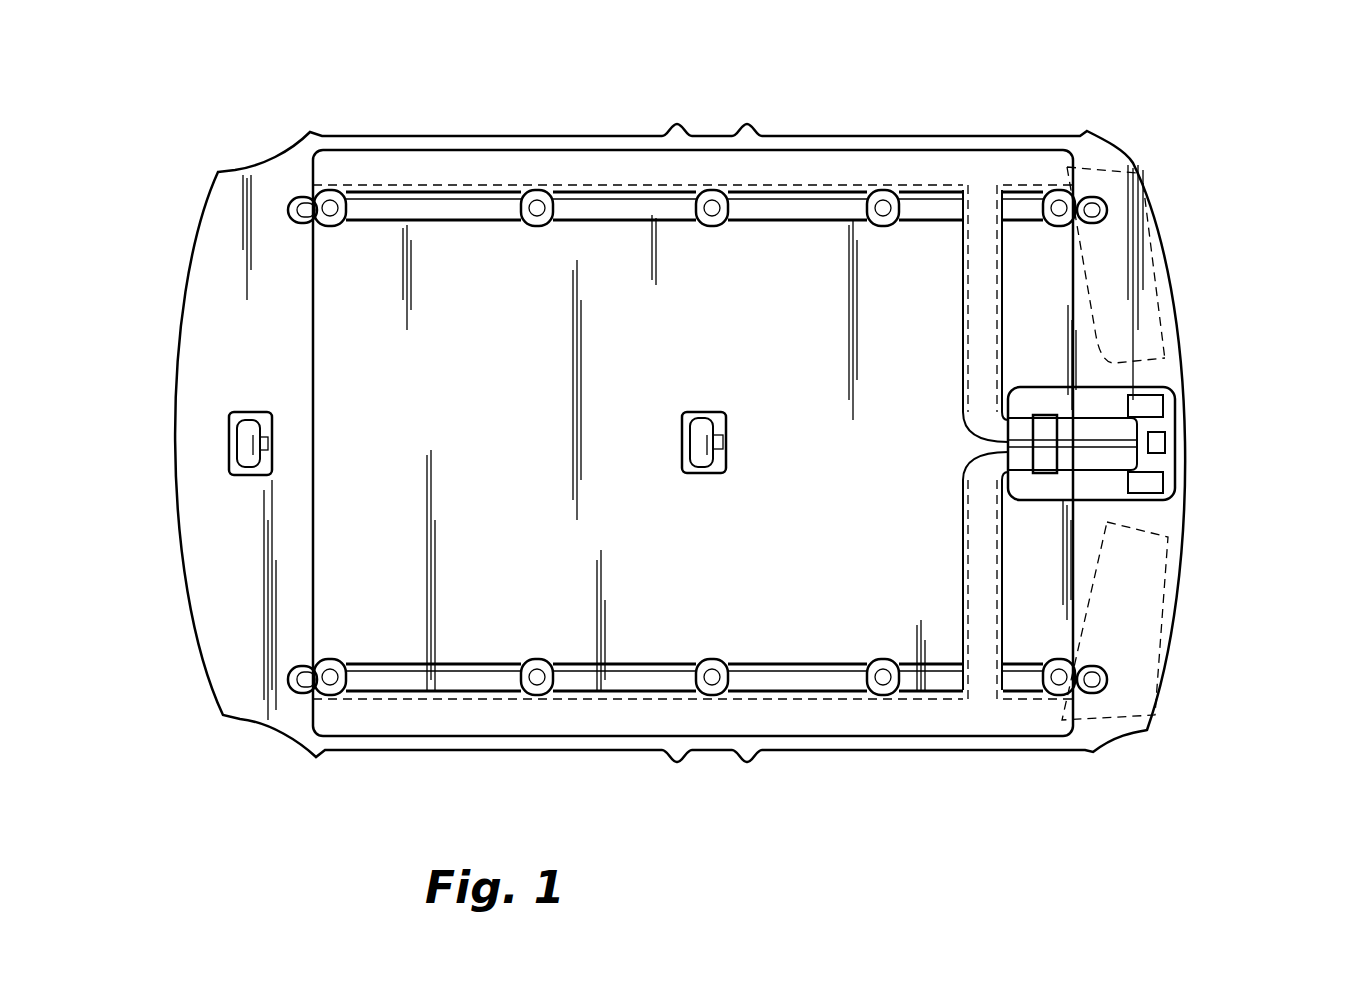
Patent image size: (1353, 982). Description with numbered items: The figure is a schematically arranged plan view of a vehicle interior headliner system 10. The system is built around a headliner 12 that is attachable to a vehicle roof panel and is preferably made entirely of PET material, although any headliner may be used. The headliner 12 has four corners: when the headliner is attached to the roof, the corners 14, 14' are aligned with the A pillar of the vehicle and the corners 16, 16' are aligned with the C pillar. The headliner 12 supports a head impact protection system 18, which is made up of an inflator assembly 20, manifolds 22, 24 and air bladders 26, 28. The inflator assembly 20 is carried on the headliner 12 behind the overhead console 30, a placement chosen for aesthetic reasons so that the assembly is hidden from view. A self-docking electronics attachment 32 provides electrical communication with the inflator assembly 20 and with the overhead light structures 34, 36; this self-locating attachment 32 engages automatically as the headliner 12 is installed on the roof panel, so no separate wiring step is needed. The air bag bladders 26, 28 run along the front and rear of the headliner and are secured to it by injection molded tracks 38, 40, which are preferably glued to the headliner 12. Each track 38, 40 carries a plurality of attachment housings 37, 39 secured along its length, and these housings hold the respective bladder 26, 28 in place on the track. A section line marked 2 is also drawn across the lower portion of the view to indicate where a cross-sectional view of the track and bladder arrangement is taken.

The vehicle interior headliner system 10 is at (1054, 790).
The headliner 12 is at (183, 540).
The corner 14 is at (1143, 224).
The corner 14' is at (1156, 767).
The corner 16 is at (212, 195).
The corner 16' is at (212, 655).
The head impact protection system 18 is at (848, 146).
The inflator assembly 20 is at (1103, 413).
The manifold 22 is at (1003, 304).
The manifold 24 is at (1003, 619).
The air bladder 26 is at (643, 165).
The air bladder 28 is at (670, 715).
The overhead console 30 is at (1175, 413).
The self-docking electronics attachment 32 is at (1168, 443).
The overhead light structure 34 is at (228, 450).
The overhead light structure 36 is at (686, 460).
The attachment housing 37 is at (337, 655).
The injection molded track 38 is at (462, 200).
The attachment housing 39 is at (333, 228).
The injection molded track 40 is at (405, 690).
The section line 2- 2 is at (883, 767).